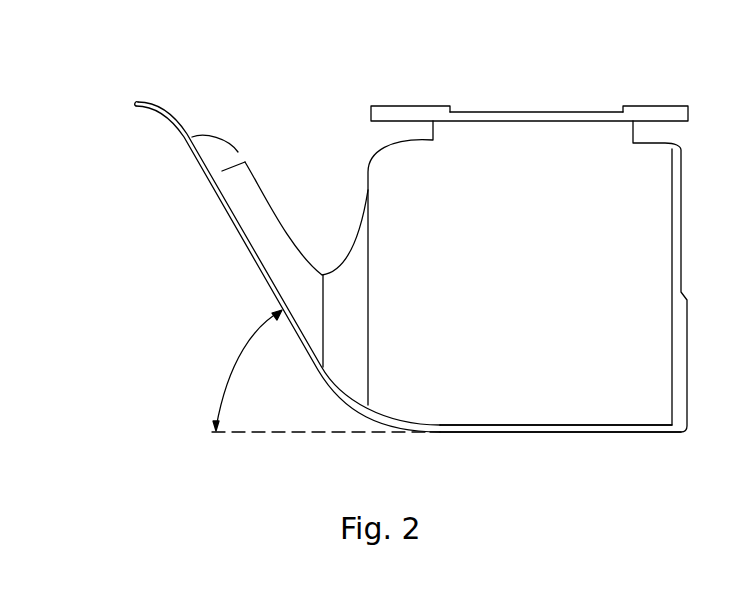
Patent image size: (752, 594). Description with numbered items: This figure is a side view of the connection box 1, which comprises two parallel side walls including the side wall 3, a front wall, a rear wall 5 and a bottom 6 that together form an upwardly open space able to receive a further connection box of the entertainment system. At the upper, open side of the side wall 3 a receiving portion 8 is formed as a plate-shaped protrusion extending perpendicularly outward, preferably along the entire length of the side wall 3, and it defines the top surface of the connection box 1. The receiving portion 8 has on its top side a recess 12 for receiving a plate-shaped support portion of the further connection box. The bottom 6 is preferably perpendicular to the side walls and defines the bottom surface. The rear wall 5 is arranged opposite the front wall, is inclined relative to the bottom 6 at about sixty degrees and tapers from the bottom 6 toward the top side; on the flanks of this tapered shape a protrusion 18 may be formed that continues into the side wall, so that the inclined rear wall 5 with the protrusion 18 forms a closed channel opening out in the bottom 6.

The connection box 1 is at (140, 188).
The side wall 3 is at (605, 378).
The rear wall 5 is at (245, 162).
The bottom 6 is at (485, 432).
The receiving portion 8 is at (499, 111).
The recess 12 is at (562, 111).
The protrusion 18 is at (243, 207).